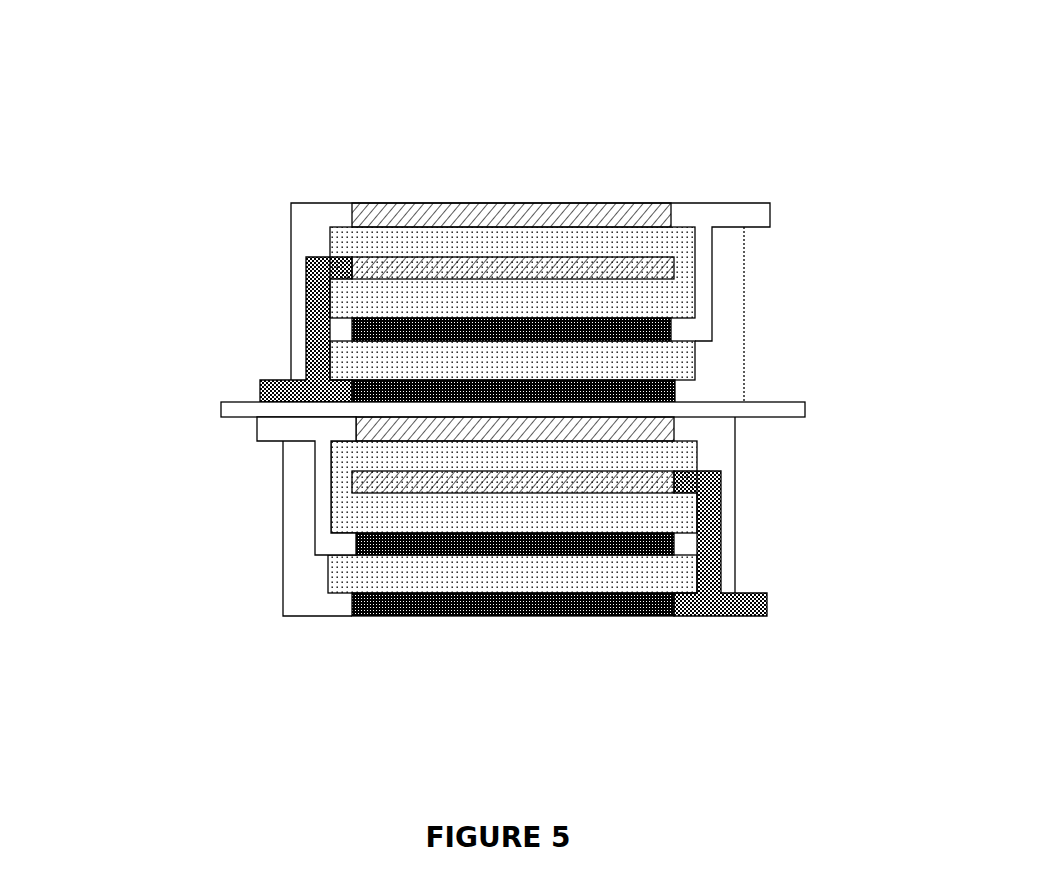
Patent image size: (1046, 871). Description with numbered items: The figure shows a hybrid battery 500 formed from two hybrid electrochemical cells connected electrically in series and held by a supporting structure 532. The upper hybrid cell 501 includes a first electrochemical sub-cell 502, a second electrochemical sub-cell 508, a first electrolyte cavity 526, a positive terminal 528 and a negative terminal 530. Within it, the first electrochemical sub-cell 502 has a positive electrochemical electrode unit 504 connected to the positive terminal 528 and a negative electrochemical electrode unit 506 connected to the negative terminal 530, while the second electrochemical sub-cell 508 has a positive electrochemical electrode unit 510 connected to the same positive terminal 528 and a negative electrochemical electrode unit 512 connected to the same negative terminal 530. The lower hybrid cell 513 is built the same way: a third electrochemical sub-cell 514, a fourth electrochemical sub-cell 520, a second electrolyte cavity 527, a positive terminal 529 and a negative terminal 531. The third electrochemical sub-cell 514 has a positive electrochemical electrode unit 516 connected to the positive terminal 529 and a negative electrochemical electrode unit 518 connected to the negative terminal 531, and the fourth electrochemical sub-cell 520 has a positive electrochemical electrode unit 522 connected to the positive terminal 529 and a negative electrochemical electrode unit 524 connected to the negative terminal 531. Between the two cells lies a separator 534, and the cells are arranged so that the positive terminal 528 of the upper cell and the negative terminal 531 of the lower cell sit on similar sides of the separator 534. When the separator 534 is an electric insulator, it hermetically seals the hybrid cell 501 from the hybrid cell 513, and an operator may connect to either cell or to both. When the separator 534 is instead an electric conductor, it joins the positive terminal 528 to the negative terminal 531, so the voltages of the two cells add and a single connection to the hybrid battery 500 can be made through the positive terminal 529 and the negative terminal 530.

The hybrid battery 500 is at (158, 96).
The hybrid cell 501 is at (143, 203).
The first electrochemical sub-cell 502 is at (237, 203).
The positive electrochemical electrode unit 504 is at (582, 258).
The negative electrochemical electrode unit 506 is at (498, 203).
The second electrochemical sub-cell 508 is at (237, 308).
The positive electrochemical electrode unit 510 is at (677, 387).
The negative electrochemical electrode unit 512 is at (673, 329).
The hybrid cell 513 is at (143, 448).
The third electrochemical sub-cell 514 is at (237, 425).
The positive electrochemical electrode unit 516 is at (653, 483).
The negative electrochemical electrode unit 518 is at (672, 430).
The fourth electrochemical sub-cell 520 is at (237, 533).
The positive electrochemical electrode unit 522 is at (513, 616).
The negative electrochemical electrode unit 524 is at (575, 552).
The first electrolyte cavity 526 is at (360, 240).
The second electrolyte cavity 527 is at (652, 578).
The positive terminal 528 is at (322, 270).
The positive terminal 529 is at (747, 613).
The negative terminal 530 is at (735, 218).
The negative terminal 531 is at (323, 547).
The supporting structure 532 is at (735, 571).
The separator 534 is at (743, 410).